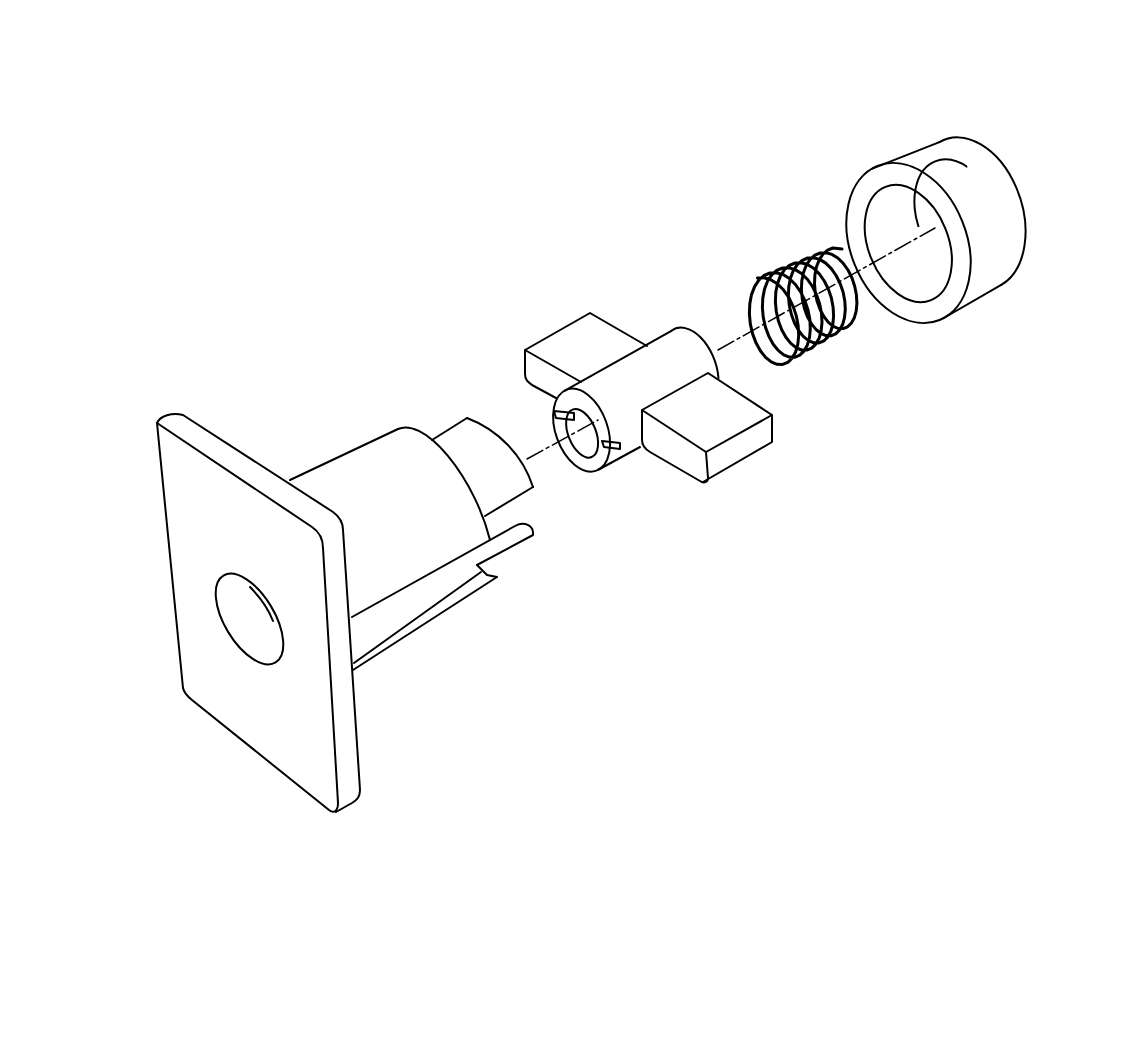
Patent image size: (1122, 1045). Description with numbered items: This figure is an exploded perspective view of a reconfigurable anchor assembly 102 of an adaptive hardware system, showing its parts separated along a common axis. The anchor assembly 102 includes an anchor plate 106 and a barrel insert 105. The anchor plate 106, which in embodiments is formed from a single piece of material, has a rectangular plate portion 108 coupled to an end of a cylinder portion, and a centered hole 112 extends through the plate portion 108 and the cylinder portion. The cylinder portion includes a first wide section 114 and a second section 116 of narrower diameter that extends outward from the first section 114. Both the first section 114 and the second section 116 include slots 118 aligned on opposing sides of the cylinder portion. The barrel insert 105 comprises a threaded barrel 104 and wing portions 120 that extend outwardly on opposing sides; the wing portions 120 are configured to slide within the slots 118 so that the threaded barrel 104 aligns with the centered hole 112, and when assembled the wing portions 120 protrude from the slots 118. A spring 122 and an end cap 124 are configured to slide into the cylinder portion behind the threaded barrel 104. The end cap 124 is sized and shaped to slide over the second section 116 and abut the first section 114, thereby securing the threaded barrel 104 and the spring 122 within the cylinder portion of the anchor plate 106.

The reconfigurable anchor assembly 102 is at (182, 108).
The threaded barrel 104 is at (580, 276).
The barrel insert 105 is at (598, 445).
The anchor plate 106 is at (328, 368).
The plate portion 108 is at (232, 542).
The centered hole 112 is at (243, 635).
The first wide section 114 is at (332, 483).
The second section 116 is at (467, 457).
The slots 118 is at (462, 581).
The wing portions 120 is at (593, 333).
The spring 122 is at (830, 313).
The end cap 124 is at (975, 222).